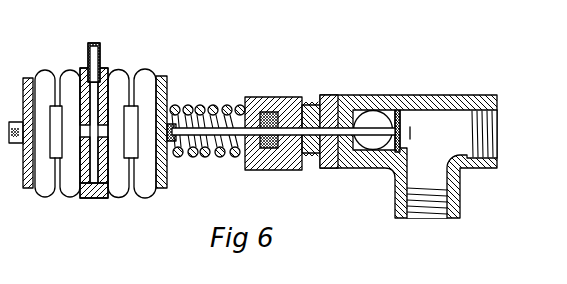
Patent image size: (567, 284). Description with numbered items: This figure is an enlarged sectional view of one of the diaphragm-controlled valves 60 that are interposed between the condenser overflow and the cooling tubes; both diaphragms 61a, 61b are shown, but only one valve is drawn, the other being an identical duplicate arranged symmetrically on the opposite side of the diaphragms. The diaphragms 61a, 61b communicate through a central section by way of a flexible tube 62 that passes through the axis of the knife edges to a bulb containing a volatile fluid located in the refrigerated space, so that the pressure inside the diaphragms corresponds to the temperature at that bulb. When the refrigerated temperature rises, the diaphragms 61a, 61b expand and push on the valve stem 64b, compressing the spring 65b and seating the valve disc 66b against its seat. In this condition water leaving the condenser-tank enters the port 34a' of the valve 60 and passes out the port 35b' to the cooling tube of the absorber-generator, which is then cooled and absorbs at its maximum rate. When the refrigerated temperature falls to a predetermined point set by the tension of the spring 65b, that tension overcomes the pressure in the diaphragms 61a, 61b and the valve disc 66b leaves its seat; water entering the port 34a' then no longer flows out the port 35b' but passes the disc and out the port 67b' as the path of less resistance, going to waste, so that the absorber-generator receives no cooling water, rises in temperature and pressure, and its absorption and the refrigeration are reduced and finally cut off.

The diaphragm-controlled valve 60 is at (428, 162).
The diaphragm 61a is at (45, 200).
The diaphragm 61b is at (142, 198).
The flexible tube 62 is at (100, 43).
The valve stem 64b is at (236, 106).
The spring 65b is at (190, 103).
The valve disc 66b is at (382, 166).
The port 67b' is at (363, 169).
The port 35b' is at (504, 134).
The port 34a' is at (414, 223).